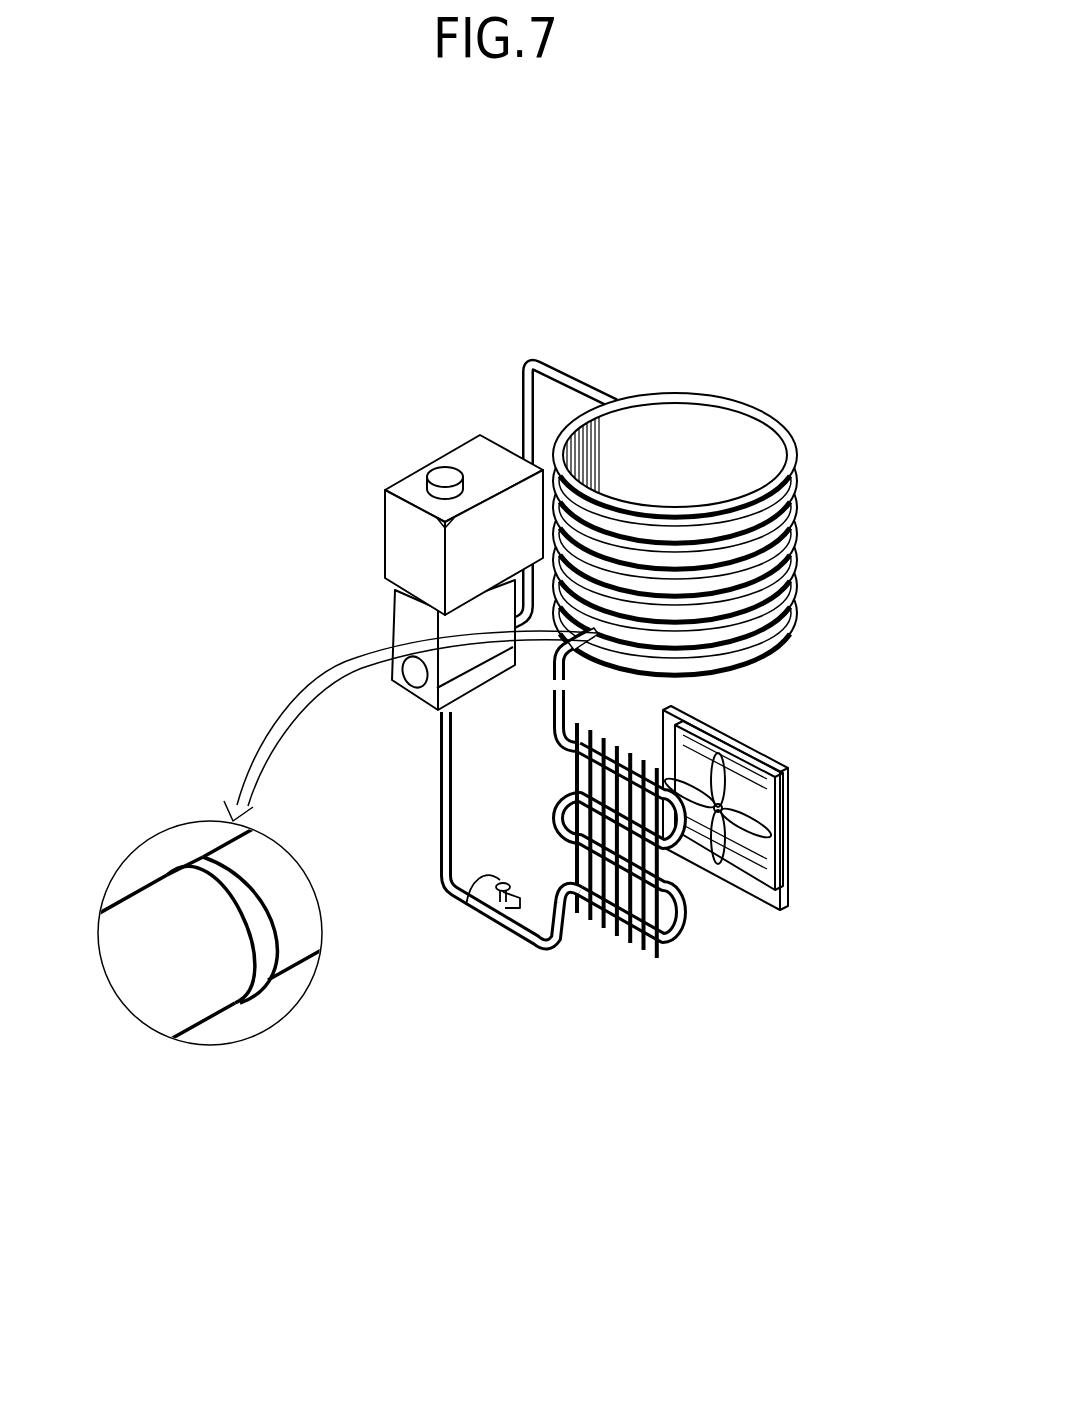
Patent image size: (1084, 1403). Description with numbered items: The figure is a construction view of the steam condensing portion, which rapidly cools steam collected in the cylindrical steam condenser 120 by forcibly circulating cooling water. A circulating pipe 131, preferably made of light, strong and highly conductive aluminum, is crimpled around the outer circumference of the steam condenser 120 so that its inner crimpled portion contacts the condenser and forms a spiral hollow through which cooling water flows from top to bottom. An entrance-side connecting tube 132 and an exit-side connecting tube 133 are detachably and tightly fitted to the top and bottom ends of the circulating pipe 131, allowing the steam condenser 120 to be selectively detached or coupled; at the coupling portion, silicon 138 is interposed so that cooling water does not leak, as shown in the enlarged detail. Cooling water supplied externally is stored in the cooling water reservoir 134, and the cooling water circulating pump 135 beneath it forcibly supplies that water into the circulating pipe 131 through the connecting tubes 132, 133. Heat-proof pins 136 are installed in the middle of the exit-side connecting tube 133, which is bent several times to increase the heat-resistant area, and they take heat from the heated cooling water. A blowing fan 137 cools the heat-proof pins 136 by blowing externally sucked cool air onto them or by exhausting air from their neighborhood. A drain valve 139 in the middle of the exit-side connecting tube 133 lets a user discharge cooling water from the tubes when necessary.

The steam condenser 120 is at (736, 445).
The circulating pipe 131 is at (793, 568).
The entrance-side connecting tube 132 is at (562, 370).
The exit-side connecting tube 133 is at (520, 927).
The cooling water reservoir 134 is at (458, 456).
The cooling water circulating pump 135 is at (402, 617).
The heat-proof pins 136 is at (660, 867).
The blowing fan 137 is at (745, 822).
The silicon 138 is at (267, 953).
The drain valve 139 is at (466, 906).